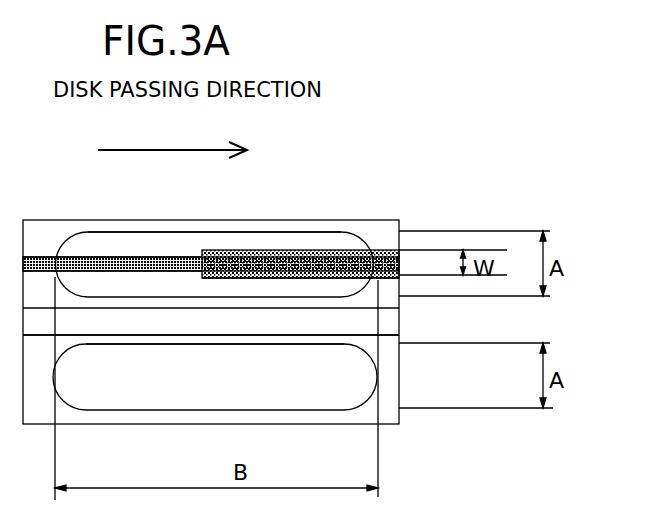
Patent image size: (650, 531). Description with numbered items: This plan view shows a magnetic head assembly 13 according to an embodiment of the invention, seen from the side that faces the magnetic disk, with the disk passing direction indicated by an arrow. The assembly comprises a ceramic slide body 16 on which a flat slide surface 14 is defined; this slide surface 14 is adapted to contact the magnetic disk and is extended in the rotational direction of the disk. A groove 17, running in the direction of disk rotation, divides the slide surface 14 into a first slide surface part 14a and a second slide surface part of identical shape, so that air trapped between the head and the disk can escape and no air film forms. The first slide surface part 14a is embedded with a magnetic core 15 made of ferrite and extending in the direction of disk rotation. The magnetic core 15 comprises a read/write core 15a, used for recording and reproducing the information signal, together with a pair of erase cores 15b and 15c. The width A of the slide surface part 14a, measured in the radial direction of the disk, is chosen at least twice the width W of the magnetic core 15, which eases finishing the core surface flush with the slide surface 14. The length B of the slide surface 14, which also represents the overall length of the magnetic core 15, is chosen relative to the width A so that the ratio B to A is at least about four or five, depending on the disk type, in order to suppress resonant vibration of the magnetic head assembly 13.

The magnetic head assembly 13 is at (102, 100).
The flat slide surface 14 is at (107, 252).
The first slide surface part 14a is at (152, 241).
The magnetic core 15 is at (281, 250).
The read/write core 15a is at (185, 258).
The erase core 15b is at (337, 250).
The erase core 15c is at (306, 272).
The ceramic slide body 16 is at (362, 220).
The groove 17 is at (390, 320).